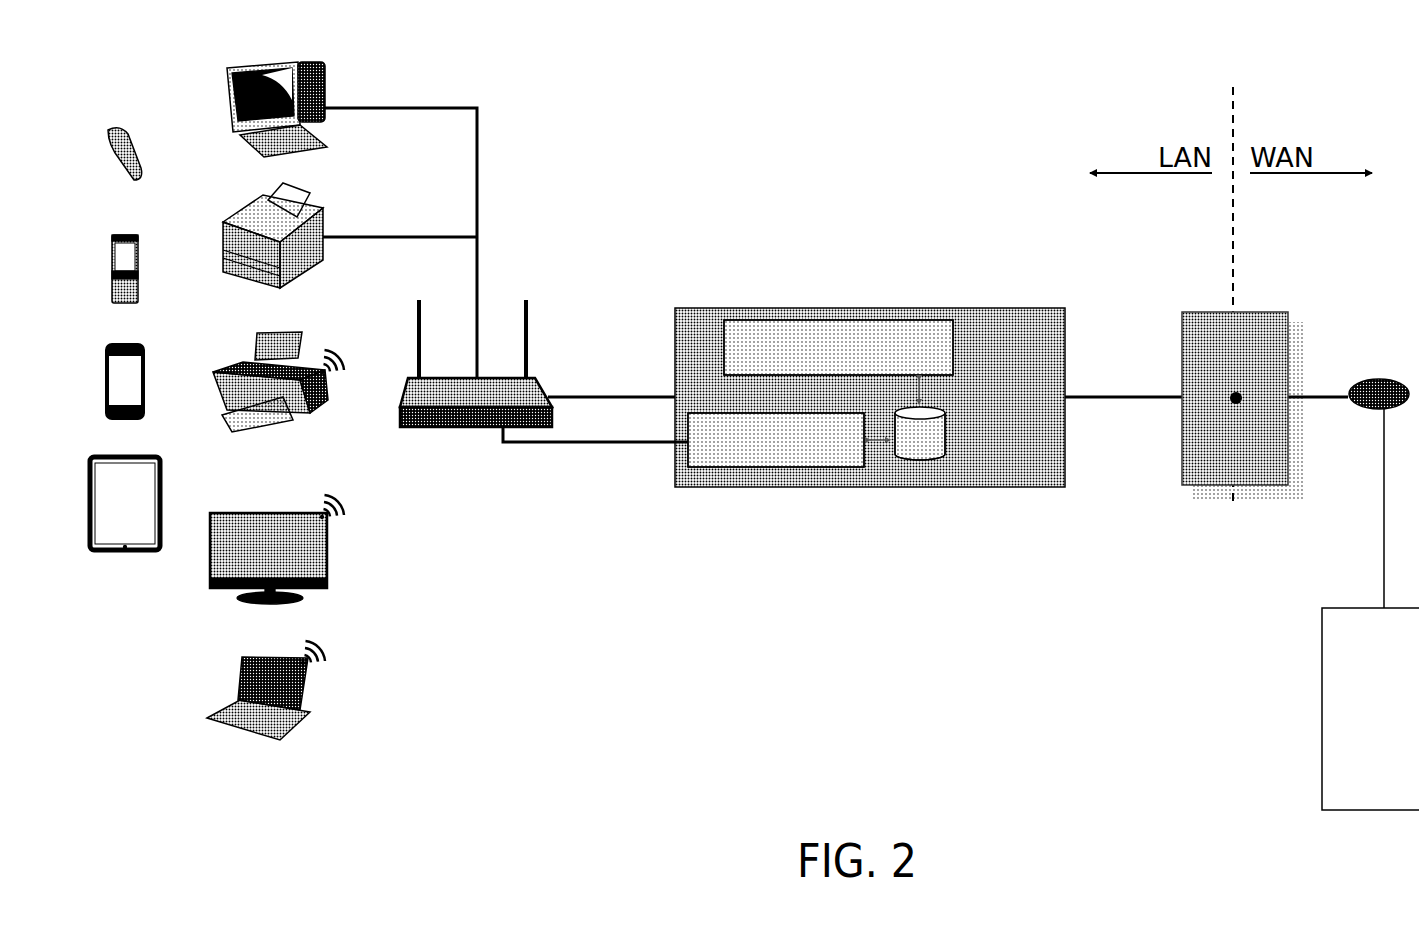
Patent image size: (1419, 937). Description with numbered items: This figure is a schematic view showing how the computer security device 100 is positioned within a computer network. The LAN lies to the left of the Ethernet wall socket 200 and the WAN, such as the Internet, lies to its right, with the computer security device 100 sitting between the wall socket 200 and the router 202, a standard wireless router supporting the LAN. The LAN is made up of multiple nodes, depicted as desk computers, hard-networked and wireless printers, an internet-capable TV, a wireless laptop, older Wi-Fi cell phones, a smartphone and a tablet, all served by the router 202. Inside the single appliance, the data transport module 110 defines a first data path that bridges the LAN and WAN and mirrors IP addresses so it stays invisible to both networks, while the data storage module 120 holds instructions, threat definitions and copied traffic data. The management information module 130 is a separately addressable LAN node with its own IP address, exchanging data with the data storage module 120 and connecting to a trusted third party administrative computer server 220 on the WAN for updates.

The computer security device 100 is at (725, 308).
The data transport module 110 is at (868, 320).
The data storage module 120 is at (943, 455).
The management information module 130 is at (723, 467).
The Ethernet wall socket 200 is at (1260, 320).
The router 202 is at (537, 378).
The third party administrative computer server 220 is at (1322, 680).